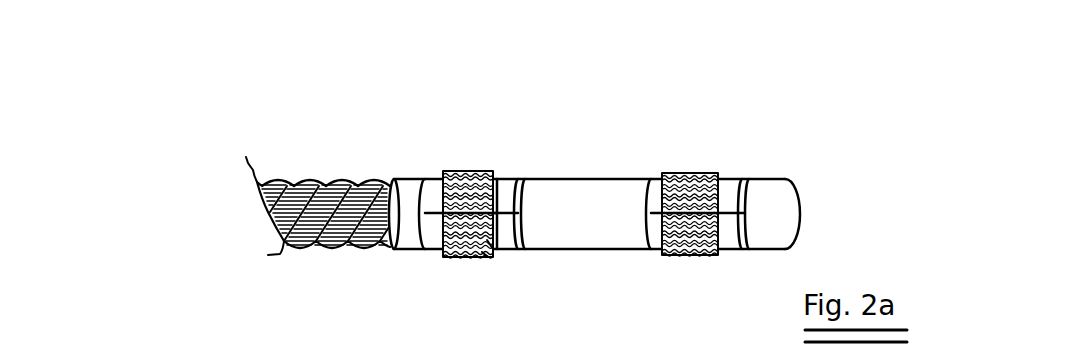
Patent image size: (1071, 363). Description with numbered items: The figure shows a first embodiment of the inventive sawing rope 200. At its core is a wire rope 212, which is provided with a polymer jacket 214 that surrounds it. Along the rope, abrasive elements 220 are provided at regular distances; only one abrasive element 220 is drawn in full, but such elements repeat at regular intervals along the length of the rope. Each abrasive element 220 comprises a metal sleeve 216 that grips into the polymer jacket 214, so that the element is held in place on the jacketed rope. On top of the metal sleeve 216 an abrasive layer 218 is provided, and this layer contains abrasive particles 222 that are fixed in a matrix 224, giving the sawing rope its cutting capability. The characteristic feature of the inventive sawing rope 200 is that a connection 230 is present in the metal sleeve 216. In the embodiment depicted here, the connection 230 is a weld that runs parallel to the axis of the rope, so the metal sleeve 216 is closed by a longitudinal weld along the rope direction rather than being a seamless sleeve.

The sawing rope 200 is at (750, 103).
The wire rope 212 is at (302, 248).
The polymer jacket 214 is at (402, 242).
The metal sleeve 216 is at (508, 185).
The abrasive layer 218 is at (467, 182).
The abrasive element 220 is at (441, 151).
The abrasive particles 222 is at (487, 245).
The matrix 224 is at (486, 252).
The connection 230 is at (647, 253).